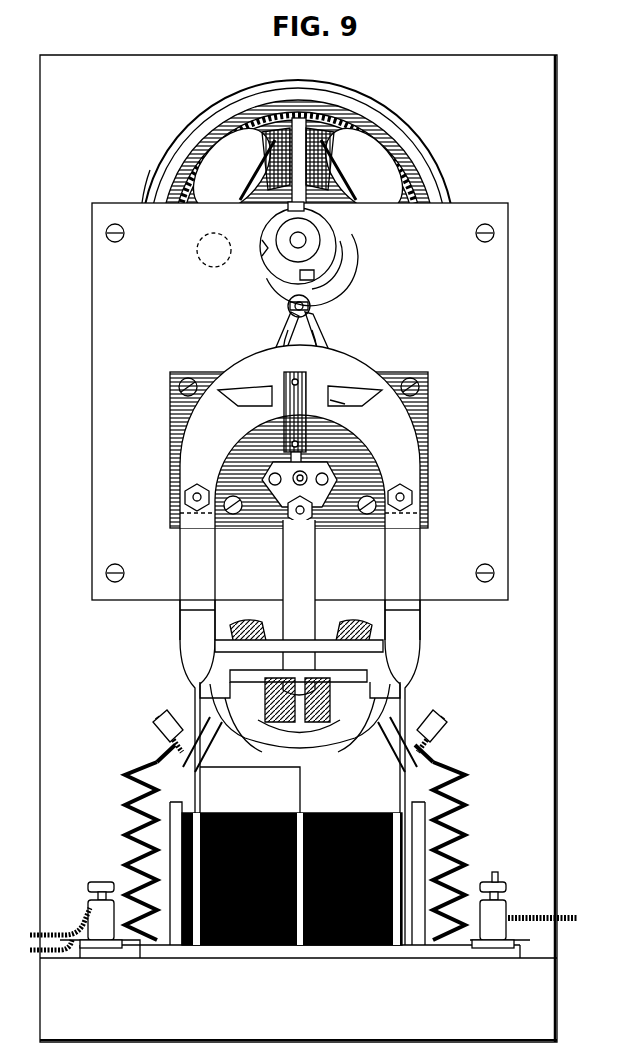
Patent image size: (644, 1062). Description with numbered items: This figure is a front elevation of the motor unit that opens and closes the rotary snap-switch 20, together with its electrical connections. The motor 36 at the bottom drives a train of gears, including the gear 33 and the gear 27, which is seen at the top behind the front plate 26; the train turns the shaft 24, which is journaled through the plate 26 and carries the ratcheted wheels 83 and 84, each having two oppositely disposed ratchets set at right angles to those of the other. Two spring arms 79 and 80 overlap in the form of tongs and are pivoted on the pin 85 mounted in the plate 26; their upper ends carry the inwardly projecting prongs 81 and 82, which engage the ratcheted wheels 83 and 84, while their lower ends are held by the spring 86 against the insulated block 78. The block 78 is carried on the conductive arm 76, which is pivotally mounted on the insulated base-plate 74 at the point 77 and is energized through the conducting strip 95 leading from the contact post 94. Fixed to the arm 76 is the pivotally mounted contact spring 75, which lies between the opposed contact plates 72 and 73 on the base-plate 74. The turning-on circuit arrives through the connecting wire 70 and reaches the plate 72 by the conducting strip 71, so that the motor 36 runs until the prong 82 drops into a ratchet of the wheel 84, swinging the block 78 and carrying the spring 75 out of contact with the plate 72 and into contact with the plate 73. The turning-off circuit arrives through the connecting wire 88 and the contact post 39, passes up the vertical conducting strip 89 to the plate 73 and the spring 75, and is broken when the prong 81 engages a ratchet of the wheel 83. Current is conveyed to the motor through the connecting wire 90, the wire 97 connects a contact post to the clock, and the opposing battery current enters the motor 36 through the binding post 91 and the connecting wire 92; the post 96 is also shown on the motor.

The rotary snap-switch 20 is at (375, 122).
The gear 27 is at (428, 186).
The front plate 26 is at (300, 401).
The shaft 24 is at (305, 240).
The ratcheted wheel 84 is at (286, 208).
The inwardly projecting prong 81 is at (337, 243).
The inwardly projecting prong 82 is at (260, 248).
The ratcheted wheel 83 is at (325, 258).
The pin 85 is at (286, 308).
The spring 86 is at (262, 318).
The spring arm 80 is at (327, 330).
The spring arm 79 is at (268, 340).
The contact spring 75 is at (330, 388).
The wire 97 is at (345, 400).
The insulated base-plate 74 is at (425, 405).
The insulated block 78 is at (230, 425).
The contact plate 73 is at (405, 455).
The contact plate 72 is at (198, 473).
The conductive arm 76 is at (272, 490).
The pivot point 77 is at (318, 512).
The conducting strip 95 is at (290, 584).
The gear 33 is at (301, 627).
The conducting strip 71 is at (193, 632).
The vertical conducting strip 89 is at (408, 632).
The motor 36 is at (238, 745).
The binding post 91 is at (168, 738).
The right screw 96 is at (435, 737).
The connecting wire 92 is at (125, 832).
The connecting wire 90 is at (460, 836).
The contact post 94 is at (90, 905).
The connecting wire 88 is at (512, 915).
The contact post 39 is at (495, 882).
The connecting wire 70 is at (570, 915).